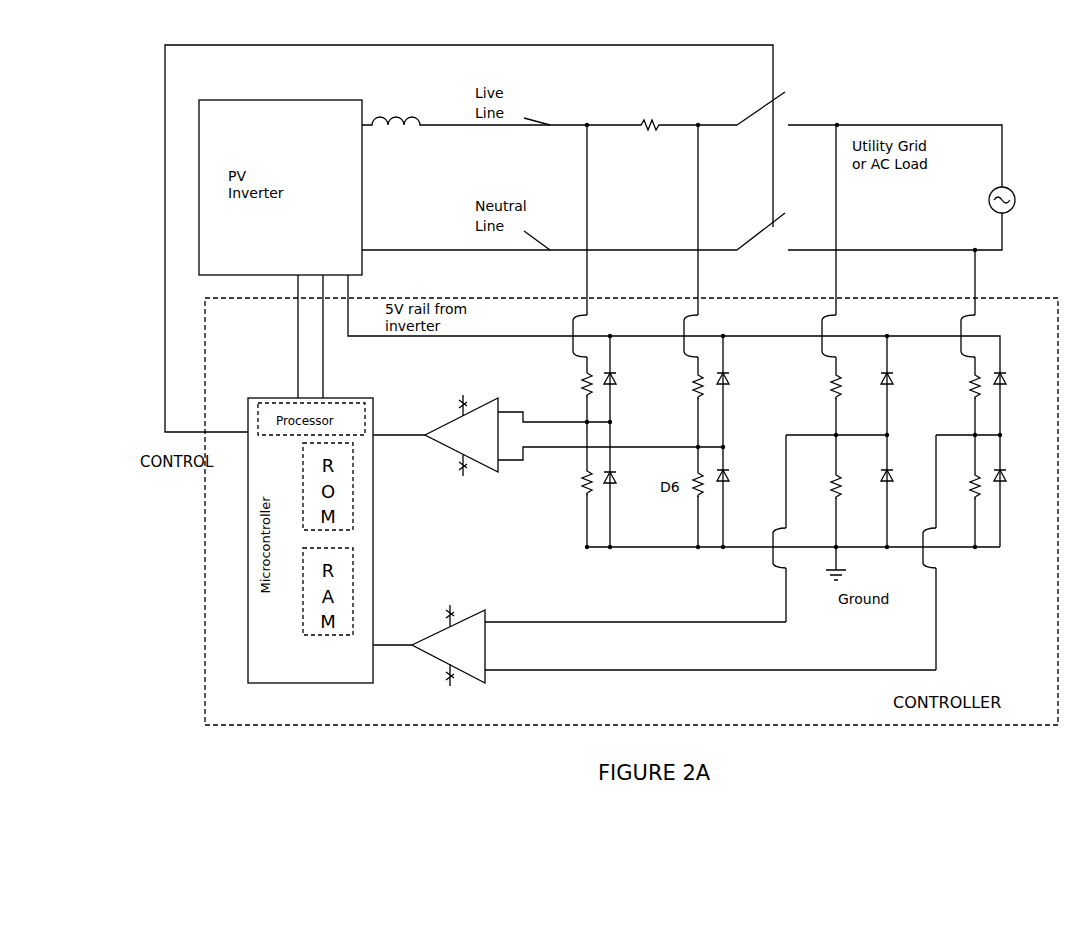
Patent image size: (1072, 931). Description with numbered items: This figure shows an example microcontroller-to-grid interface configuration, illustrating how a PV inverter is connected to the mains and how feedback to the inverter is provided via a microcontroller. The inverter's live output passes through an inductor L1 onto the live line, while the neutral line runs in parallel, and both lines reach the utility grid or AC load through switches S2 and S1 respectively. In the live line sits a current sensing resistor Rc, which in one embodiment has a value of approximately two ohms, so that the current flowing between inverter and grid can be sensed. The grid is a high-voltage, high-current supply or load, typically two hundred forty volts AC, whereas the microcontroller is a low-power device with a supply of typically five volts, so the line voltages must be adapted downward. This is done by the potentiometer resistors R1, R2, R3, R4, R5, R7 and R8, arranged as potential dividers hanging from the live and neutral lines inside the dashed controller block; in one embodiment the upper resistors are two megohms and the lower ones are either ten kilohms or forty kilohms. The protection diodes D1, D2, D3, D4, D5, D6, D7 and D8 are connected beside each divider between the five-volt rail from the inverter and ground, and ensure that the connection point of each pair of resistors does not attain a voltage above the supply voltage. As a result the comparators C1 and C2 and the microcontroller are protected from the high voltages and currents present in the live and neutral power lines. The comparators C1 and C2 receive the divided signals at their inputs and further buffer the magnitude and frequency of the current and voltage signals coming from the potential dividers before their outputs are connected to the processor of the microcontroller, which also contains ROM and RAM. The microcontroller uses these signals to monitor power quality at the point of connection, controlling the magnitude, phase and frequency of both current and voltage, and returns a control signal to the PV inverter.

The inductor L1 is at (395, 111).
The current sensing resistor Rc is at (649, 111).
The switch S1 is at (761, 226).
The switch S2 is at (761, 103).
The comparator C1 is at (654, 645).
The comparator C2 is at (548, 435).
The potentiometer resistor R1 is at (960, 385).
The potentiometer resistor R2 is at (827, 385).
The potentiometer resistor R3 is at (827, 485).
The potentiometer resistor R4 is at (960, 485).
The potentiometer resistor R5 is at (571, 481).
The potentiometer resistor R7 is at (681, 385).
The potentiometer resistor R8 is at (571, 383).
The protection diode D1 is at (1011, 378).
The protection diode D2 is at (898, 378).
The protection diode D3 is at (898, 475).
The protection diode D4 is at (1011, 475).
The protection diode D5 is at (622, 477).
The protection diode D6 is at (735, 475).
The protection diode D7 is at (735, 378).
The protection diode D8 is at (622, 378).